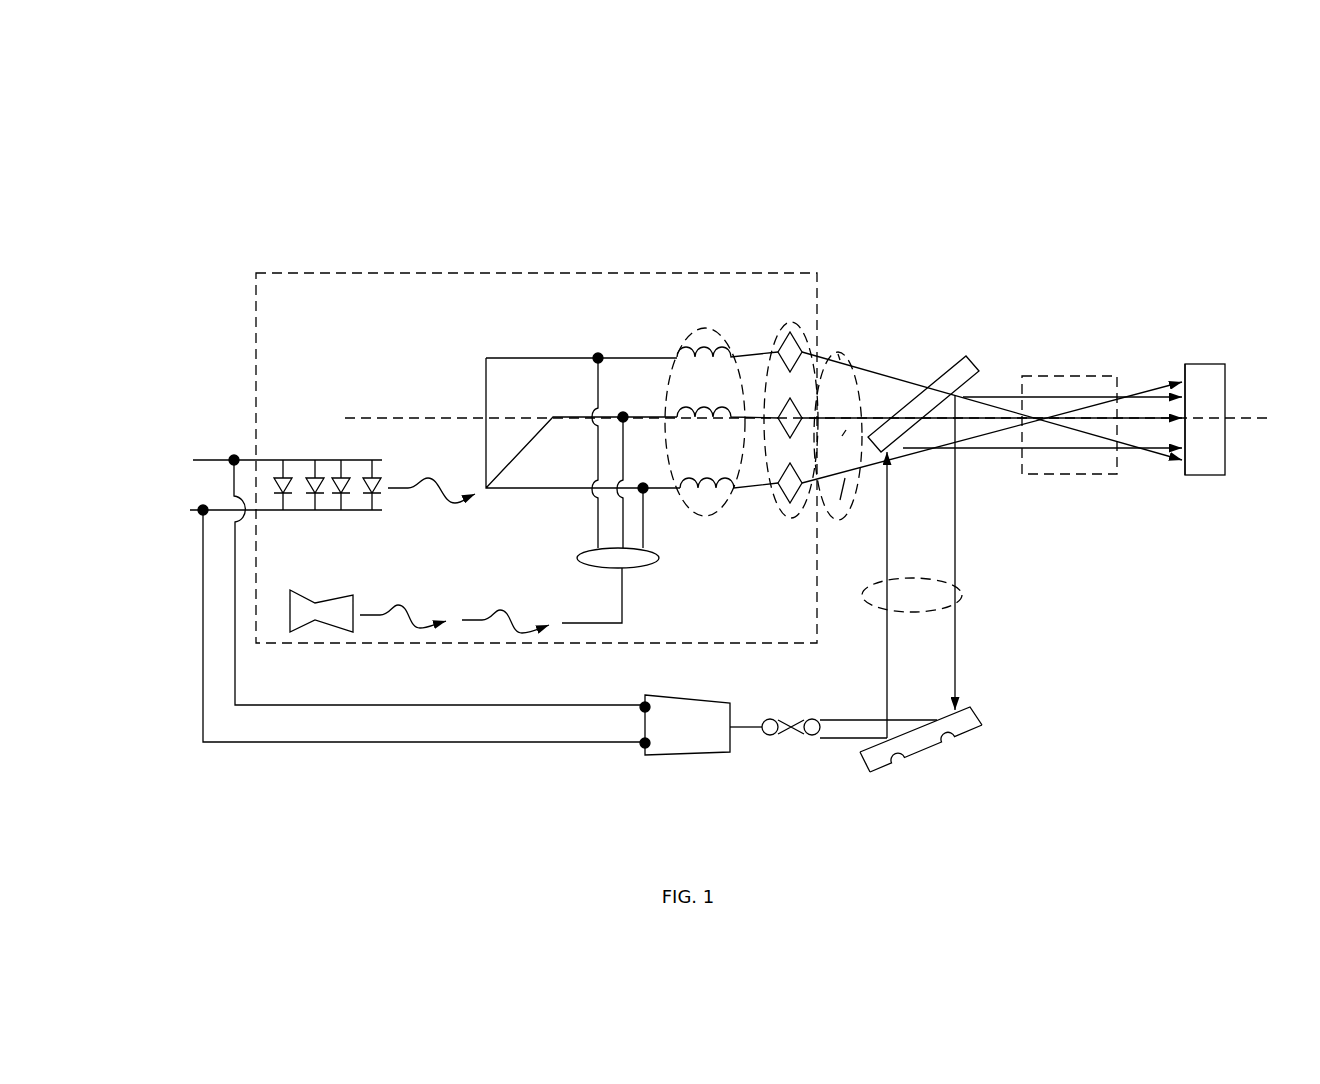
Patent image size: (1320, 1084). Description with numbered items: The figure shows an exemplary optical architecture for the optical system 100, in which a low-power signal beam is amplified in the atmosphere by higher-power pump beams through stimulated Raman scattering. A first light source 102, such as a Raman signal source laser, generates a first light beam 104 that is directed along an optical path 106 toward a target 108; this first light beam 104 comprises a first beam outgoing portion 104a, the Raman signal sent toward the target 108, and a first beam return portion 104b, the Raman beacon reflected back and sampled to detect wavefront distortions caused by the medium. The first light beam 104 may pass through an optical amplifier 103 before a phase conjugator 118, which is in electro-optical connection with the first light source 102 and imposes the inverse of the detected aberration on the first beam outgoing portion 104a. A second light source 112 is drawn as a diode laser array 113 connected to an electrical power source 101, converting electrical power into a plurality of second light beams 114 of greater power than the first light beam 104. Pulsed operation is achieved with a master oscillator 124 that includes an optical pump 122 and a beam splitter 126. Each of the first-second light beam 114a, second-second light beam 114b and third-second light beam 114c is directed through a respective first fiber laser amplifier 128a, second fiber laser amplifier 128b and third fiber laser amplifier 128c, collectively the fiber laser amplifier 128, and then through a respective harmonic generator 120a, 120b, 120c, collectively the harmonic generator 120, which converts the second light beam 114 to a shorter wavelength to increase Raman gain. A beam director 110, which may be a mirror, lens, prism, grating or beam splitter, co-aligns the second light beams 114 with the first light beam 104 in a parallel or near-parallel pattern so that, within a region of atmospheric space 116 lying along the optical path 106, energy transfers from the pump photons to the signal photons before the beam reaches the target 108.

The optical system 100 is at (424, 227).
The electrical power source 101 is at (208, 482).
The first light source 102 is at (673, 748).
The optical amplifier 103 is at (783, 740).
The first light beam 104 is at (972, 597).
The first beam outgoing portion 104a is at (900, 520).
The first beam return portion 104b is at (960, 655).
The optical path 106 is at (1273, 410).
The target 108 is at (1207, 458).
The beam director 110 is at (950, 355).
The second light source 112 is at (282, 265).
The diode laser array 113 is at (302, 455).
The second light beam 114 is at (857, 357).
The first-second light beam 114a is at (845, 357).
The second-second light beam 114b is at (846, 430).
The third-second light beam 114c is at (845, 478).
The region of atmospheric space 116 is at (1062, 372).
The phase conjugator 118 is at (920, 745).
The harmonic generator 120 is at (790, 313).
The first harmonic generator 120a is at (777, 352).
The second harmonic generator 120b is at (786, 398).
The third harmonic generator 120c is at (787, 467).
The optical pump 122 is at (437, 473).
The master oscillator 124 is at (317, 632).
The beam splitter 126 is at (590, 553).
The fiber laser amplifier 128 is at (663, 370).
The first fiber laser amplifier 128a is at (700, 355).
The second fiber laser amplifier 128b is at (696, 403).
The third fiber laser amplifier 128c is at (703, 505).